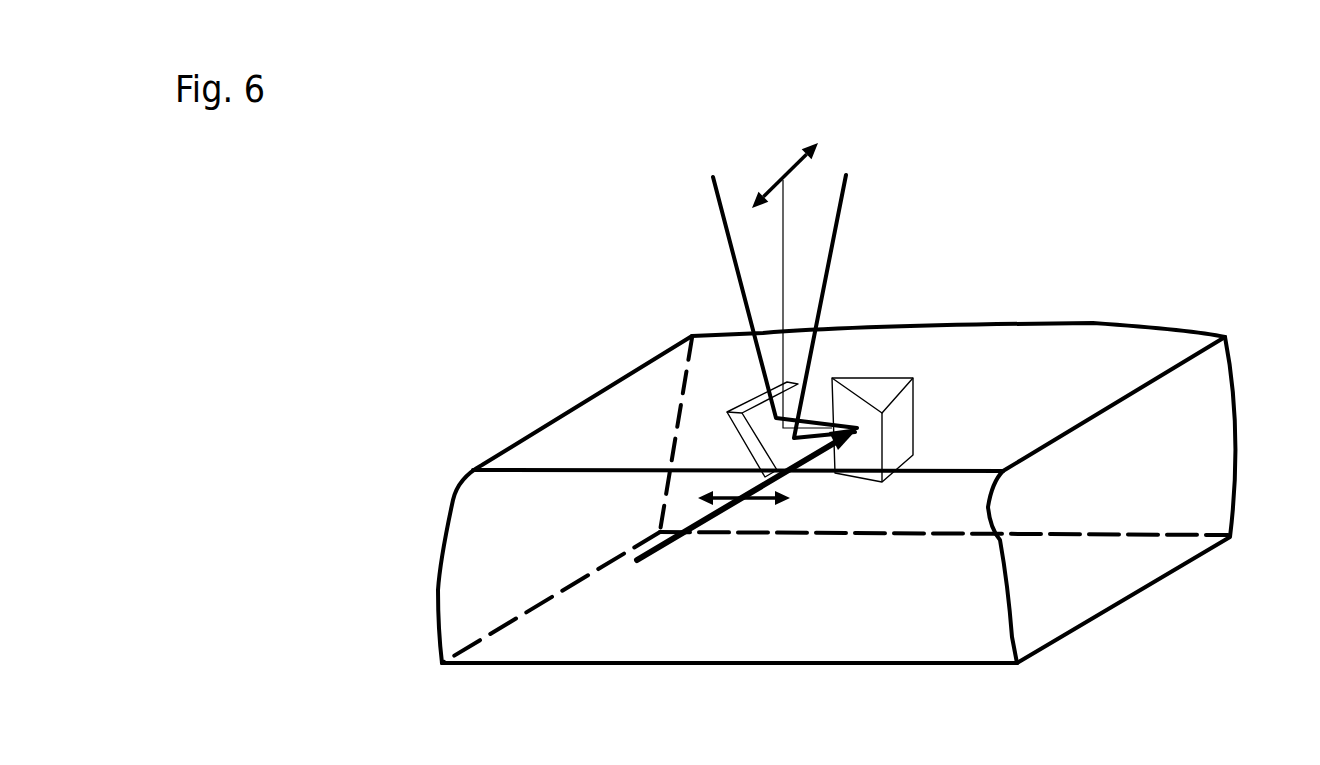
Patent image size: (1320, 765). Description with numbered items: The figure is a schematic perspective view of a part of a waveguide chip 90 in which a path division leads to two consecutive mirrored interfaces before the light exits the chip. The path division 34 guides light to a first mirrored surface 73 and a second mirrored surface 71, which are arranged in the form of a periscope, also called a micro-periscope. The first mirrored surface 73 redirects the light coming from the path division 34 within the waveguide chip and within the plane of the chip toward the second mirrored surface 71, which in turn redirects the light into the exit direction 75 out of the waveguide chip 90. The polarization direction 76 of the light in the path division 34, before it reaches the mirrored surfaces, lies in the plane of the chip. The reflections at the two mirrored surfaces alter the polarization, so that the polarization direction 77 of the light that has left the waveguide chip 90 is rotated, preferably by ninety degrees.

The path division 34 is at (652, 560).
The second mirrored surface 71 is at (733, 422).
The first mirrored surface 73 is at (863, 400).
The exit direction 75 is at (784, 277).
The polarization direction of light in the path division 76 is at (698, 497).
The polarization direction of light having left the waveguide chip 77 is at (822, 153).
The waveguide chip 90 is at (1239, 427).